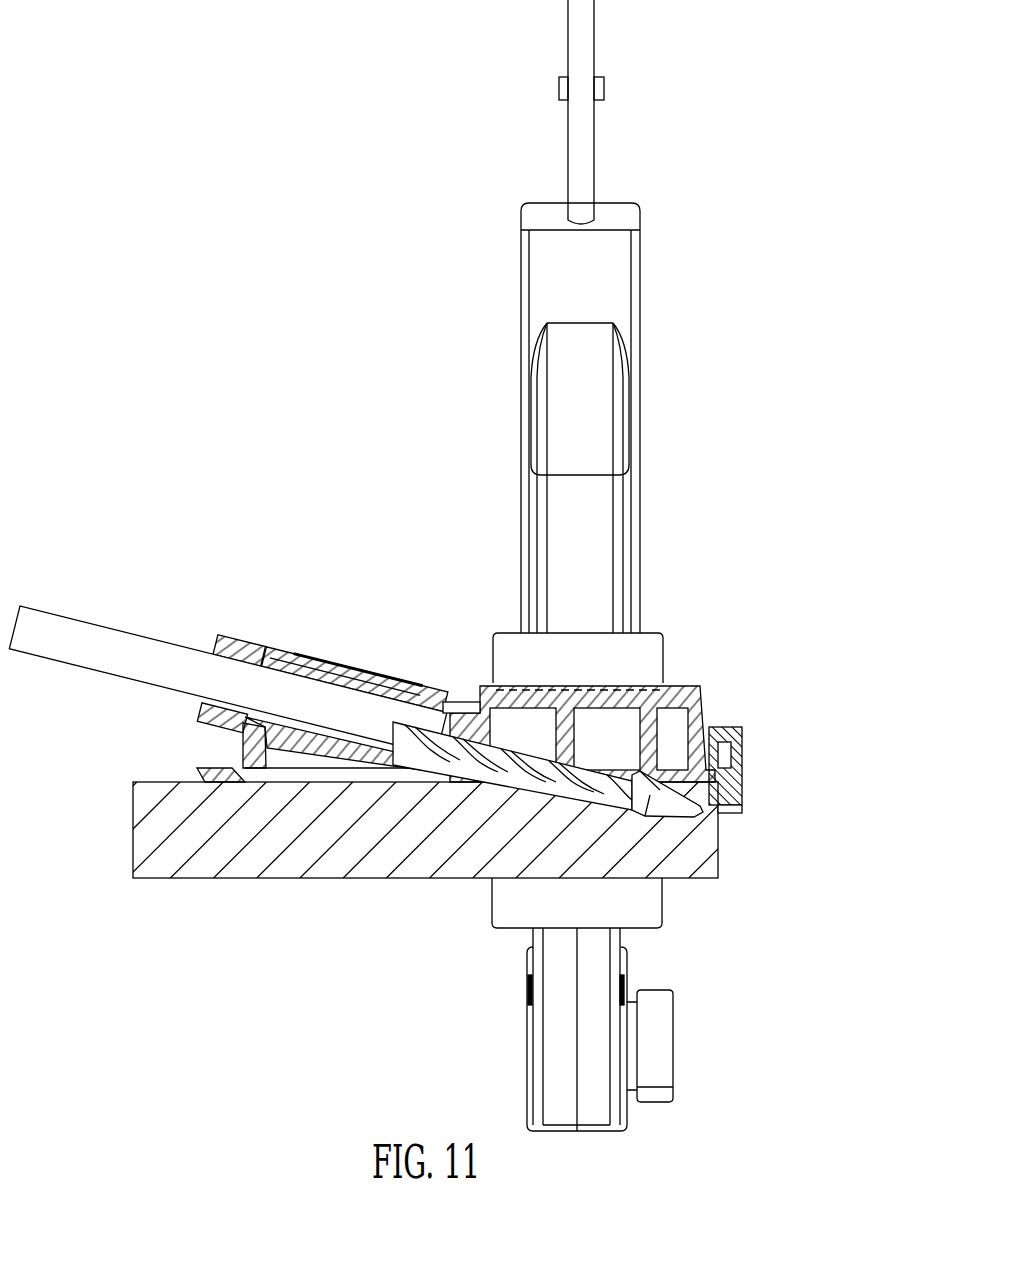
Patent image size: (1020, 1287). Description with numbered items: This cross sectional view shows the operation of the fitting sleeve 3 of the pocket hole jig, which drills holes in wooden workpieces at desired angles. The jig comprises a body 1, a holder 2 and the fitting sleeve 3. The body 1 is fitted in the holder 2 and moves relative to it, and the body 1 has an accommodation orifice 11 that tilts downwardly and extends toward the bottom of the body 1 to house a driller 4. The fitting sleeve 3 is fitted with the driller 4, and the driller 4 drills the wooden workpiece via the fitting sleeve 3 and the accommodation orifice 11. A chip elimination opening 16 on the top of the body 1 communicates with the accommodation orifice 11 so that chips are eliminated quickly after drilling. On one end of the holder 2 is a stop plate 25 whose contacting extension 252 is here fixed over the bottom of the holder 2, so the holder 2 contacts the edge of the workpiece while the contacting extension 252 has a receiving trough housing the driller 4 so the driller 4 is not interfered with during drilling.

The body 1 is at (245, 750).
The holder 2 is at (200, 771).
The fitting sleeve 3 is at (238, 634).
The driller 4 is at (72, 617).
The accommodation orifice 11 is at (335, 652).
The chip elimination opening 16 is at (460, 688).
The stop plate 25 is at (742, 727).
The contacting extension 252 is at (740, 812).